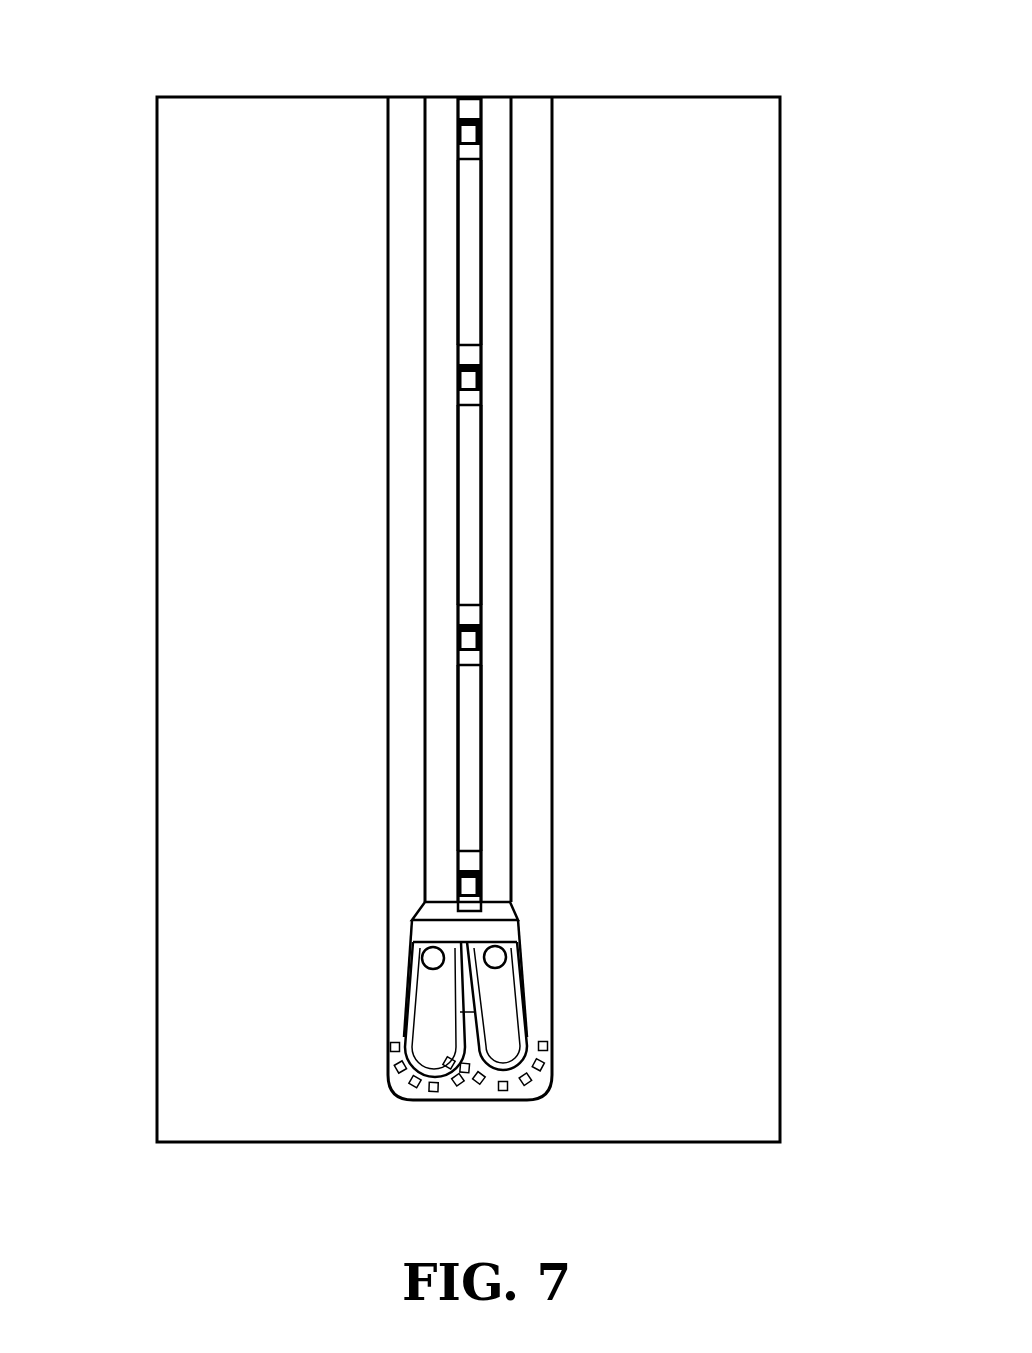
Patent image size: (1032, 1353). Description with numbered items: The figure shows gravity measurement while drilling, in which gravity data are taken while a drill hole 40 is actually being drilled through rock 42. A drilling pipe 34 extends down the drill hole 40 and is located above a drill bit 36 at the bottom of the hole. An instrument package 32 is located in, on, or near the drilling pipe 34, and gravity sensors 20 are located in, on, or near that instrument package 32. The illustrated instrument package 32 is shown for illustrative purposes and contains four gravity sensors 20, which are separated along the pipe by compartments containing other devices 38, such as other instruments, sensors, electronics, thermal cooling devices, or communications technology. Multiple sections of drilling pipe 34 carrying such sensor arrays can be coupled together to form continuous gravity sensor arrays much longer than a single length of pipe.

The gravity sensor 20 is at (485, 130).
The instrument package 32 is at (470, 106).
The drilling pipe 34 is at (420, 453).
The drill bit 36 is at (432, 1000).
The compartments containing other devices 38 is at (485, 218).
The drill hole 40 is at (400, 870).
The rock 42 is at (270, 798).